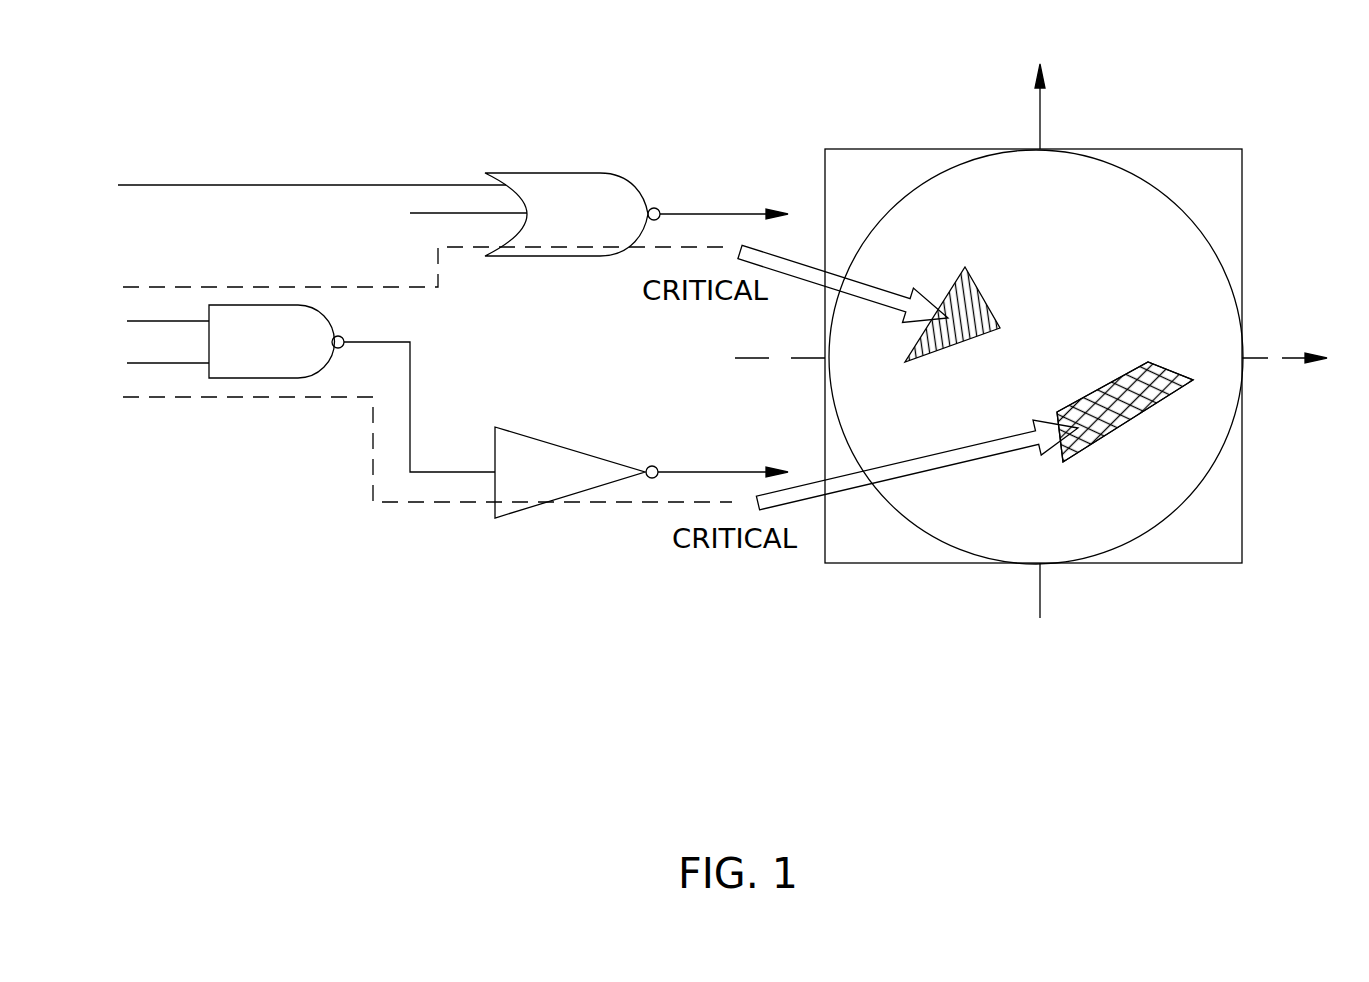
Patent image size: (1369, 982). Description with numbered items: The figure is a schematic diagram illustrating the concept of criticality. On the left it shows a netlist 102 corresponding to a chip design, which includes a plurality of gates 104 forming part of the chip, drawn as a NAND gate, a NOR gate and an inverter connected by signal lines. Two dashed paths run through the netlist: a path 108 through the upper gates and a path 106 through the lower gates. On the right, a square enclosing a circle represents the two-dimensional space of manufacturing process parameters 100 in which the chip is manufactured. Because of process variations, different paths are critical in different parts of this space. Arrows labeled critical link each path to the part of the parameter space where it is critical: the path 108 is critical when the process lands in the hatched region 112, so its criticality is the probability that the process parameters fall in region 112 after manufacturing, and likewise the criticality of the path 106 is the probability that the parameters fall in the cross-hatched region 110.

The two-dimensional space of manufacturing process parameters 100 is at (1045, 382).
The netlist 102 is at (268, 160).
The gates 104 is at (297, 359).
The path 106 is at (180, 397).
The path 108 is at (173, 287).
The region 110 is at (1140, 408).
The region 112 is at (990, 290).